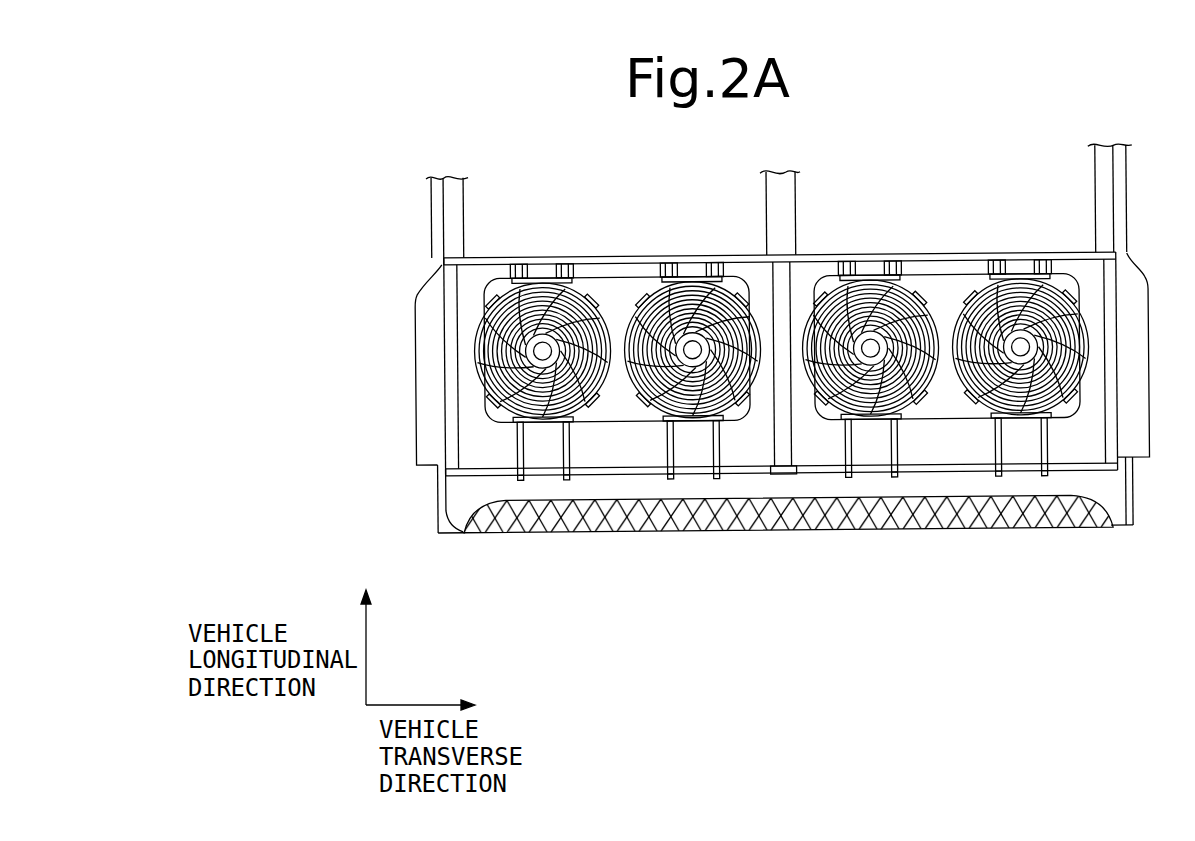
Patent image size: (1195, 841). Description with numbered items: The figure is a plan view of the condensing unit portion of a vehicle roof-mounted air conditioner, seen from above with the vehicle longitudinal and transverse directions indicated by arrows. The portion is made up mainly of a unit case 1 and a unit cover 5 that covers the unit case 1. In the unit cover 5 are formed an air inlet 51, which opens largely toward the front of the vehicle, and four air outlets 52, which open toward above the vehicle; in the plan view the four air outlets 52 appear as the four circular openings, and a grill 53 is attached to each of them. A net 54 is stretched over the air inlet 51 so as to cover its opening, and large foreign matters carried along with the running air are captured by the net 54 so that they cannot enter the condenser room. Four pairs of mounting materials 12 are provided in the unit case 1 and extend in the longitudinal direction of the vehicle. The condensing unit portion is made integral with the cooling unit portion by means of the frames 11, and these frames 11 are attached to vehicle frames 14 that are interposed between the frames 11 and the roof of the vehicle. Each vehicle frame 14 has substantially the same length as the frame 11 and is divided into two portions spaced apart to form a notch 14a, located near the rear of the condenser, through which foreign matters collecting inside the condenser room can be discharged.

The unit case 1 is at (788, 524).
The unit cover 5 is at (1127, 288).
The frame 11 is at (460, 207).
The mounting material 12 is at (1043, 473).
The vehicle frame 14 is at (440, 210).
The notch 14a is at (440, 262).
The air inlet 51 is at (684, 505).
The air outlet 52 is at (930, 420).
The grill 53 is at (931, 425).
The net 54 is at (880, 530).